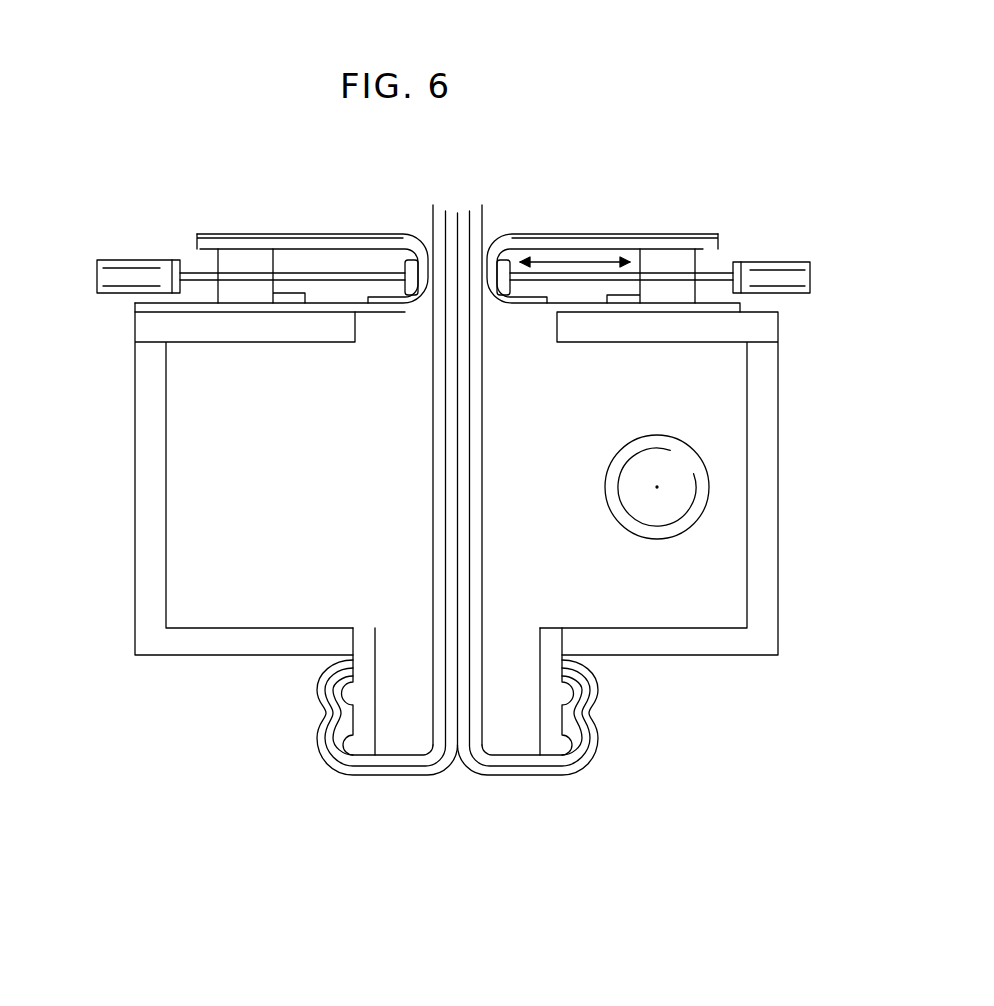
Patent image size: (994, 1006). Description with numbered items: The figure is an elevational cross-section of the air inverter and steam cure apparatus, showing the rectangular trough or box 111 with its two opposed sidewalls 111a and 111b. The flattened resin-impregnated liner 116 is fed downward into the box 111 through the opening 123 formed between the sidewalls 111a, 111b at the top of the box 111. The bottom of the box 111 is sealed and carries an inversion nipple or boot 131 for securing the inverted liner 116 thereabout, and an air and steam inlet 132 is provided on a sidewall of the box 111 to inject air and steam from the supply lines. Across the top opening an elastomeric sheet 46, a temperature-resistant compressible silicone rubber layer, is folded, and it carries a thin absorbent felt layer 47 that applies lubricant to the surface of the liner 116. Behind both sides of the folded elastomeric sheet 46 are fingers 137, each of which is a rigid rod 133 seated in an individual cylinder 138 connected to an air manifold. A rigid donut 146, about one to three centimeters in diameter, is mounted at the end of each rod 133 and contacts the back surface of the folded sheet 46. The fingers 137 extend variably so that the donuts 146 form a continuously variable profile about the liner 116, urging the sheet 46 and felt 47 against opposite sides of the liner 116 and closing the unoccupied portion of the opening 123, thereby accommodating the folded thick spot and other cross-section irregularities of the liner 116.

The elastomeric sheet 46 is at (196, 245).
The absorbent layer 47 is at (222, 235).
The liner 116 is at (427, 216).
The opening 123 is at (500, 216).
The rigid donut 146 is at (508, 264).
The rigid rod 133 is at (578, 278).
The finger 137 is at (740, 240).
The cylinder 138 is at (768, 272).
The box 111 is at (212, 680).
The sidewall of box 111a is at (147, 505).
The sidewall of box 111b is at (762, 488).
The inversion nipple or boot 131 is at (402, 720).
The air and steam inlet 132 is at (655, 507).